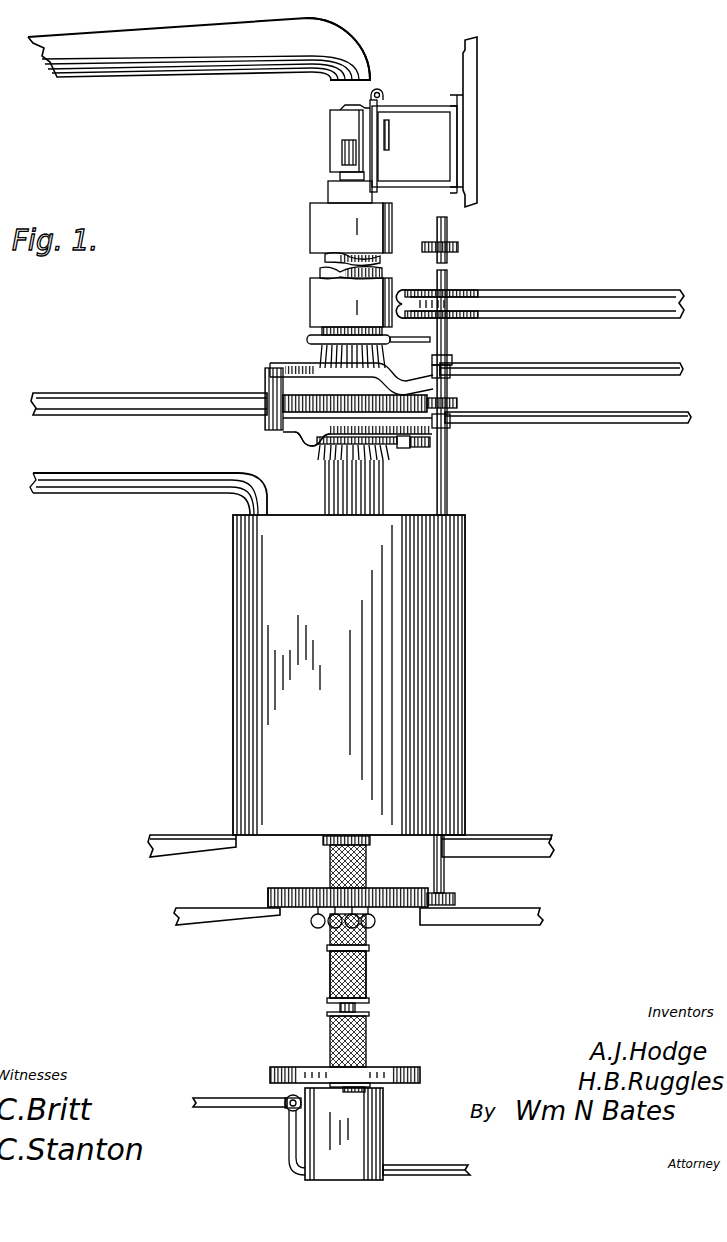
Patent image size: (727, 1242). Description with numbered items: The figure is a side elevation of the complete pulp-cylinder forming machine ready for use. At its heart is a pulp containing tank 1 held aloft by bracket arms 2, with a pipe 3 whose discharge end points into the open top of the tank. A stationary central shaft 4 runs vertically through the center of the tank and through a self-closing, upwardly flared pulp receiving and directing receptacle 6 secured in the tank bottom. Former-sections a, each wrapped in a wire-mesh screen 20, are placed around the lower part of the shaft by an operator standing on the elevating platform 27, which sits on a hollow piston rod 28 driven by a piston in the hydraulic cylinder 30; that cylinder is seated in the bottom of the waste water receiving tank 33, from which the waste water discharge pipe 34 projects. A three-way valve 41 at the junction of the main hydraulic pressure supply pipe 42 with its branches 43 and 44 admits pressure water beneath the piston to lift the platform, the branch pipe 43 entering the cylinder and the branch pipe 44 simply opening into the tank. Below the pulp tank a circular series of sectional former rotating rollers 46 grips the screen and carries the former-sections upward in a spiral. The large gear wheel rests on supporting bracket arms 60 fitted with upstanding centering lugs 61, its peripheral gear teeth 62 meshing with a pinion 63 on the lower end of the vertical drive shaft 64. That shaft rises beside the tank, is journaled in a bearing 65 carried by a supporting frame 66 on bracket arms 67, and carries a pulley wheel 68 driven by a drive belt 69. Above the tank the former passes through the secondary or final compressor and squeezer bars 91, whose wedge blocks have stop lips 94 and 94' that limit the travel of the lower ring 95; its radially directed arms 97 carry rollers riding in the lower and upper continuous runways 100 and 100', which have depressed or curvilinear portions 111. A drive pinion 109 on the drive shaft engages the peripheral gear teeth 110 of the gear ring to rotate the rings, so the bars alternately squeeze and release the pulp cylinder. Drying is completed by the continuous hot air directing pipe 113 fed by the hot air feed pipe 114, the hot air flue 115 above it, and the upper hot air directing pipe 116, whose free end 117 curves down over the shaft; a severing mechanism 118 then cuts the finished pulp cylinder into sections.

The pulp containing tank 1 is at (252, 668).
The bracket arms 2 is at (162, 842).
The pipe 3 is at (153, 490).
The stationary central shaft 4 is at (345, 177).
The self-closing upwardly flared pulp receiving and directing receptacle 6 is at (322, 840).
The former-section a is at (367, 875).
The screen 20 is at (367, 973).
The elevating platform 27 is at (392, 1068).
The hollow piston rod 28 is at (370, 1085).
The hydraulic cylinder 30 is at (365, 1089).
The waste water receiving tank 33 is at (370, 1145).
The waste water discharge pipe 34 is at (405, 1166).
The three-way valve 41 is at (287, 1106).
The main hydraulic pressure supply pipe 42 is at (213, 1098).
The branch pipe 43 is at (295, 1146).
The branch pipe 44 is at (295, 1098).
The sectional former rotating rollers 46 is at (315, 925).
The supporting bracket arms 60 is at (190, 918).
The upstanding centering lugs 61 is at (268, 895).
The peripheral gear teeth 62 is at (285, 892).
The pinion 63 is at (455, 897).
The vertical drive shaft 64 is at (447, 492).
The bearing 65 is at (445, 428).
The supporting frame 66 is at (298, 440).
The bracket arms 67 is at (183, 395).
The pulley wheel 68 is at (472, 290).
The drive belt 69 is at (595, 300).
The secondary or final compressor and squeezer bars 91 is at (322, 272).
The upper and lower stop lips 94 is at (339, 453).
The stop lips 94' is at (374, 354).
The lower ring 95 is at (312, 437).
The radially directed arms 97 is at (398, 448).
The lower continuous runway 100 is at (504, 458).
The upper continuous runway 100' is at (326, 342).
The drive pinion 109 is at (455, 401).
The peripheral gear teeth 110 is at (432, 365).
The depressed or curvilinear portions 111 is at (432, 360).
The continuous hot air directing pipe 113 is at (308, 335).
The hot air feed pipe 114 is at (418, 335).
The hot air flue 115 is at (330, 226).
The upper hot air directing pipe 116 is at (198, 47).
The free end 117 is at (355, 44).
The severing mechanism 118 is at (340, 124).